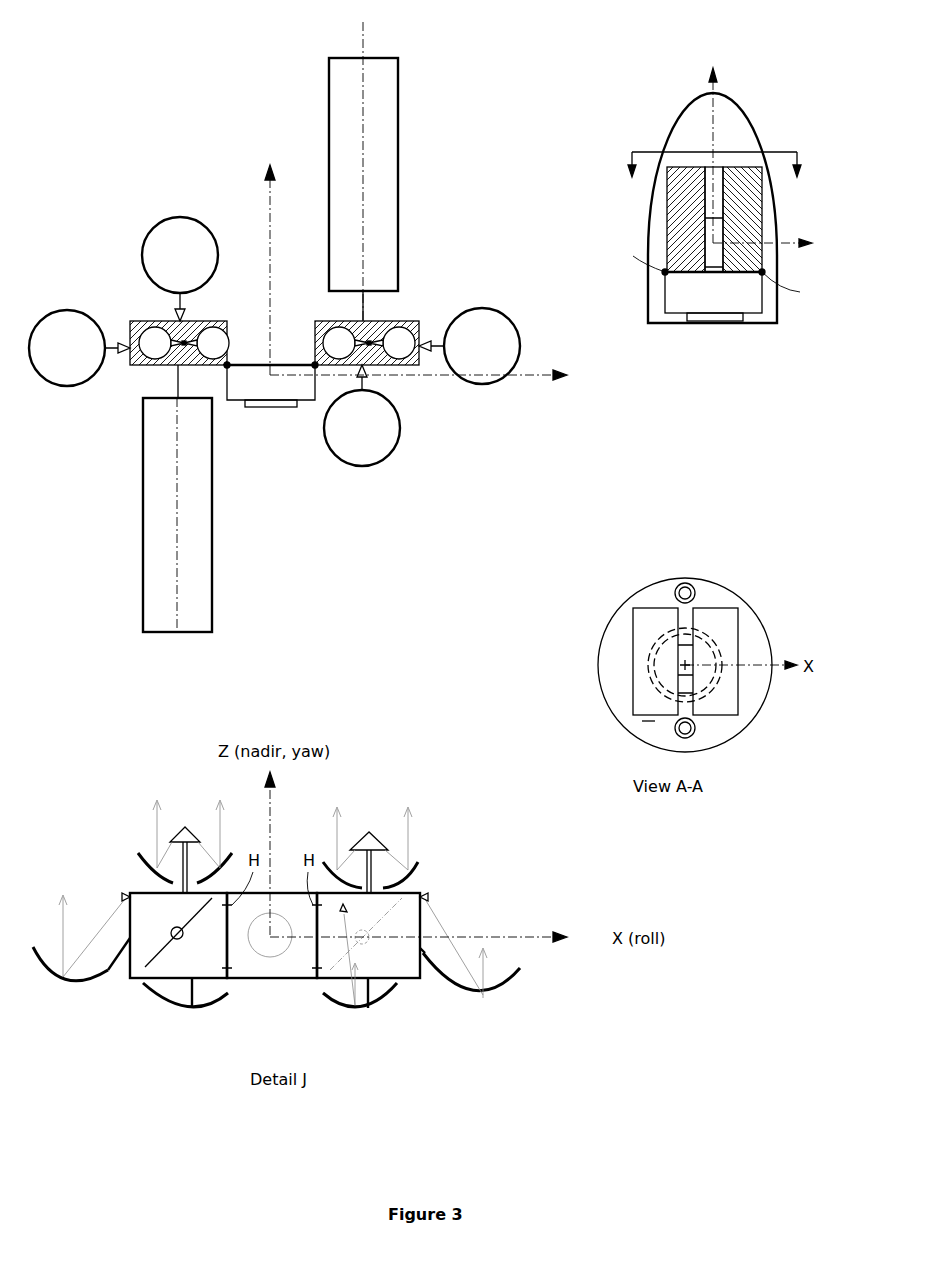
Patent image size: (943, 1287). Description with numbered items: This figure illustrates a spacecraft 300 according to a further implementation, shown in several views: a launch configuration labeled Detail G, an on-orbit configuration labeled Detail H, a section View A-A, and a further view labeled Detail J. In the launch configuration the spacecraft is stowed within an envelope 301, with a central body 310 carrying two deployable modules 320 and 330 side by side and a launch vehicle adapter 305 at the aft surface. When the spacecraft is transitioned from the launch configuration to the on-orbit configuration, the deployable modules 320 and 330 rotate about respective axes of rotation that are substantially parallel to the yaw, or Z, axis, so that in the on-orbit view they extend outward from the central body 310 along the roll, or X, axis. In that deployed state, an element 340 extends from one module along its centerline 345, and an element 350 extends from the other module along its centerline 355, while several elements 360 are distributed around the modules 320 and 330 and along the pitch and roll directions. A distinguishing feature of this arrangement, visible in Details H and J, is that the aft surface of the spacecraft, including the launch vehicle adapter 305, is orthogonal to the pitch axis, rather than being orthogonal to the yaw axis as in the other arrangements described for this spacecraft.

The antenna system 300 is at (118, 62).
The launch vehicle fairing 301 is at (672, 122).
The launch vehicle adapter 305 is at (270, 407).
The central spacecraft bus / hub 310 is at (240, 402).
The first deployable module 320 is at (195, 318).
The second deployable module 330 is at (398, 321).
The first solar panel / payload unit 340 is at (329, 190).
The centerline axis of unit 340 345 is at (363, 30).
The second solar panel / payload unit 350 is at (212, 488).
The centerline axis of unit 350 355 is at (177, 512).
The antenna reflectors 360 is at (145, 255).